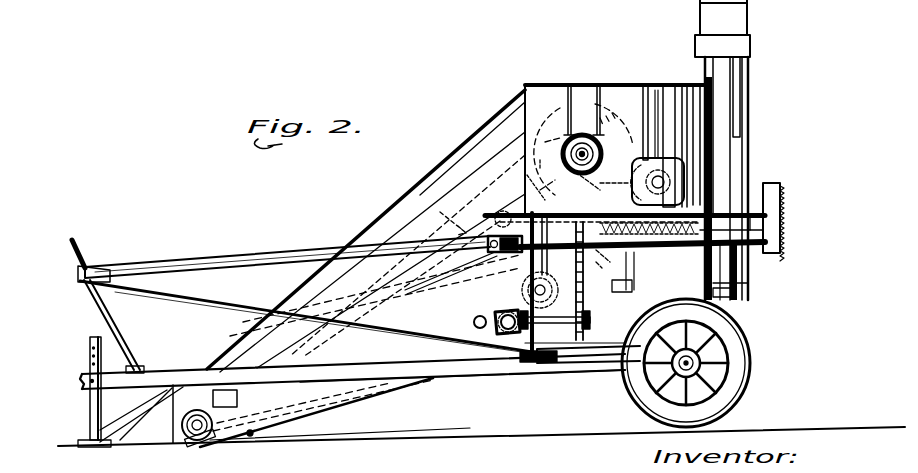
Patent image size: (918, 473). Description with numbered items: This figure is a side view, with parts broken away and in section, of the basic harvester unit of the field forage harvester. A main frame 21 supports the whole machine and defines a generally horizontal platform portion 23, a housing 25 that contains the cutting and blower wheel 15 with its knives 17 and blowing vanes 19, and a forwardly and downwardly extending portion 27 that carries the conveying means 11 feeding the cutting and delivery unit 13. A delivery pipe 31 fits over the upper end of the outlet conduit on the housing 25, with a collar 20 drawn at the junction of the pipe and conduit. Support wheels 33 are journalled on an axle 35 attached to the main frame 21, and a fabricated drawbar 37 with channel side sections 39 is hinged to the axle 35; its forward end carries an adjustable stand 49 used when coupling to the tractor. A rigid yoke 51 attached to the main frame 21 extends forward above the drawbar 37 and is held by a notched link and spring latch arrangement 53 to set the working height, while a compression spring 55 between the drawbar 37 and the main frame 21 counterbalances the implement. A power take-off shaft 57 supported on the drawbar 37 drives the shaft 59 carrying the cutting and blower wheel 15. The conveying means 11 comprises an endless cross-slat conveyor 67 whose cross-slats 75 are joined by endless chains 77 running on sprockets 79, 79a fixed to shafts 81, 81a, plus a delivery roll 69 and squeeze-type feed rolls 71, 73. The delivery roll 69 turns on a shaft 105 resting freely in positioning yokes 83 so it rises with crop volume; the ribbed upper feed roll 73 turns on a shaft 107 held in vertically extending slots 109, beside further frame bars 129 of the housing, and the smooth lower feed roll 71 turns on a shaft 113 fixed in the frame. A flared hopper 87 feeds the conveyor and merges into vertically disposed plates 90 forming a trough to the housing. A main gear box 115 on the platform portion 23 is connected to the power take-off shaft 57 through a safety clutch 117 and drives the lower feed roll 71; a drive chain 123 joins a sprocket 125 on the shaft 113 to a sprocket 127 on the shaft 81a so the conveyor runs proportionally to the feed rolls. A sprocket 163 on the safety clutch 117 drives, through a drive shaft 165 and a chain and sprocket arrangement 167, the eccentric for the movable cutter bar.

The conveying means 11 is at (447, 213).
The cutting and delivery unit 13 is at (758, 138).
The cutting and blower wheel 15 is at (728, 179).
The knives 17 is at (712, 184).
The blowing vanes 19 is at (735, 101).
The collar 20 is at (751, 55).
The main frame 21 is at (595, 341).
The horizontal platform portion 23 is at (527, 183).
The housing 25 is at (750, 278).
The forwardly and downwardly extending portion 27 is at (321, 335).
The delivery pipe 31 is at (748, 19).
The support wheels 33 is at (745, 379).
The axle 35 is at (690, 362).
The drawbar 37 is at (467, 379).
The channel side sections 39 is at (433, 378).
The adjustable stand 49 is at (88, 347).
The yoke 51 is at (148, 264).
The notched link and spring latch arrangement 53 is at (86, 255).
The compression spring 55 is at (549, 358).
The power take-off shaft 57 is at (781, 223).
The shaft 59 is at (778, 197).
The endless cross-slat conveyor 67 is at (318, 296).
The delivery roll 69 is at (545, 85).
The lower feed roll 71 is at (622, 301).
The upper feed roll 73 is at (596, 186).
The cross-slats 75 is at (245, 335).
The endless chains 77 is at (262, 322).
The sprocket 79 is at (232, 444).
The sprocket 79a is at (539, 291).
The shaft 81 is at (200, 441).
The rearward supporting shaft 81a is at (553, 290).
The positioning yokes 83 is at (598, 85).
The flared hopper 87 is at (455, 162).
The vertically disposed plates 90 is at (530, 100).
The shaft 105 is at (580, 154).
The shaft 107 is at (682, 68).
The vertically extending slots 109 is at (668, 85).
The shaft 113 is at (613, 276).
The main gear box 115 is at (615, 298).
The safety clutch 117 is at (532, 263).
The drive chain 123 is at (600, 191).
The sprocket 125 is at (600, 251).
The sprocket 127 is at (638, 236).
The housing bars 129 is at (648, 85).
The sprocket 163 is at (548, 291).
The drive shaft 165 is at (506, 337).
The chain and sprocket arrangement 167 is at (563, 321).